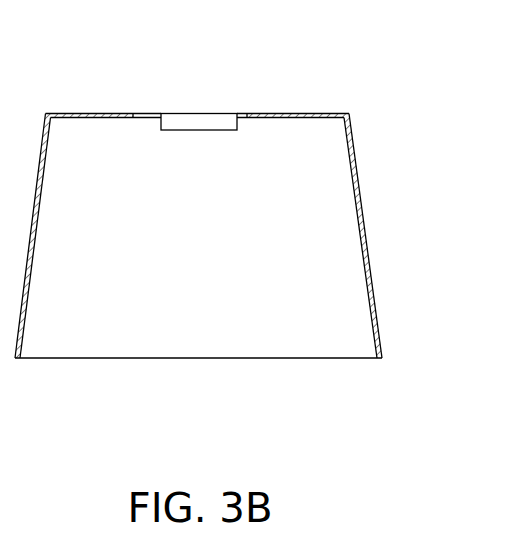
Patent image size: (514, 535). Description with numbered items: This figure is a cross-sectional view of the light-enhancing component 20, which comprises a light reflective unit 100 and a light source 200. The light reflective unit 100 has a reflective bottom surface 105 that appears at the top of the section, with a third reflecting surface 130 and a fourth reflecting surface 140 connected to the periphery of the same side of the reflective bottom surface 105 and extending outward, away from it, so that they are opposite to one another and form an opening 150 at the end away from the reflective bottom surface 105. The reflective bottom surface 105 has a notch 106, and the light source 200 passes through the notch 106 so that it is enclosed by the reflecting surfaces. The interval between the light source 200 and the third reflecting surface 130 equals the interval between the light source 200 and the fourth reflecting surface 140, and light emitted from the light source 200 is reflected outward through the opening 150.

The light-enhancing component 20 is at (390, 42).
The light reflective unit 100 is at (394, 179).
The reflective bottom surface 105 is at (116, 122).
The notch 106 is at (253, 113).
The third reflecting surface 130 is at (36, 275).
The fourth reflecting surface 140 is at (361, 275).
The opening 150 is at (212, 364).
The light source 200 is at (198, 122).